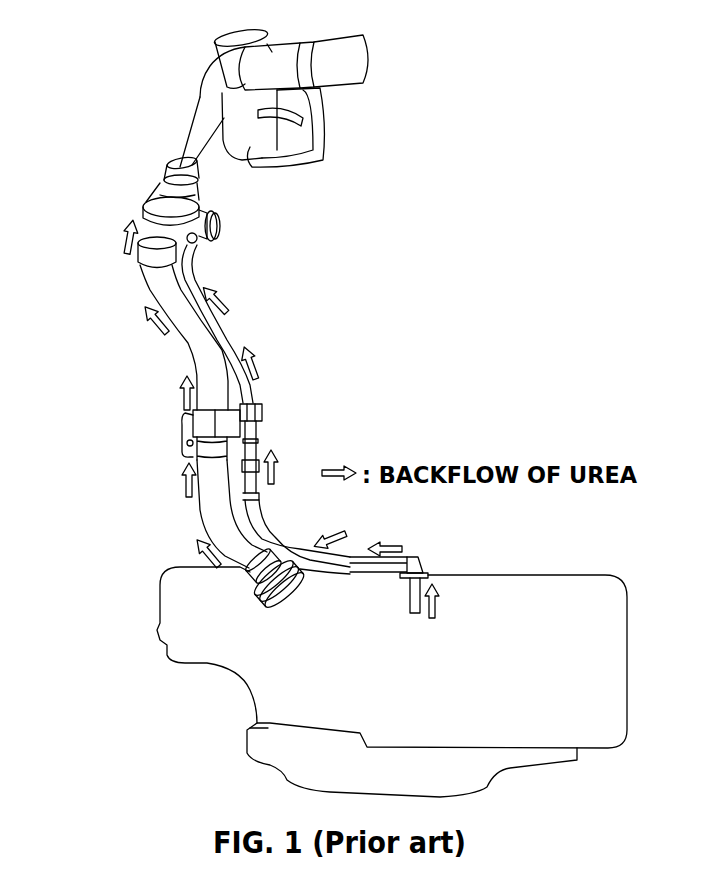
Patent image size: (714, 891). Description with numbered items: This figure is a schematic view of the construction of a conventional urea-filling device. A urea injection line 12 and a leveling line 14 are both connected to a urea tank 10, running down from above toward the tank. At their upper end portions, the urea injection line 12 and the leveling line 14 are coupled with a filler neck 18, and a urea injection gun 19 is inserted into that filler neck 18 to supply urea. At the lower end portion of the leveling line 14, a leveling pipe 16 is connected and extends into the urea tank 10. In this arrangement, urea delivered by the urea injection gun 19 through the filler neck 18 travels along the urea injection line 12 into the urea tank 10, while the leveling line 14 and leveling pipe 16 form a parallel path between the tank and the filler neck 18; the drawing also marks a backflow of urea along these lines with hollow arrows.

The urea tank 10 is at (592, 576).
The urea injection line 12 is at (153, 292).
The leveling line 14 is at (231, 348).
The leveling pipe 16 is at (412, 608).
The filler neck 18 is at (146, 178).
The urea injection gun 19 is at (184, 131).